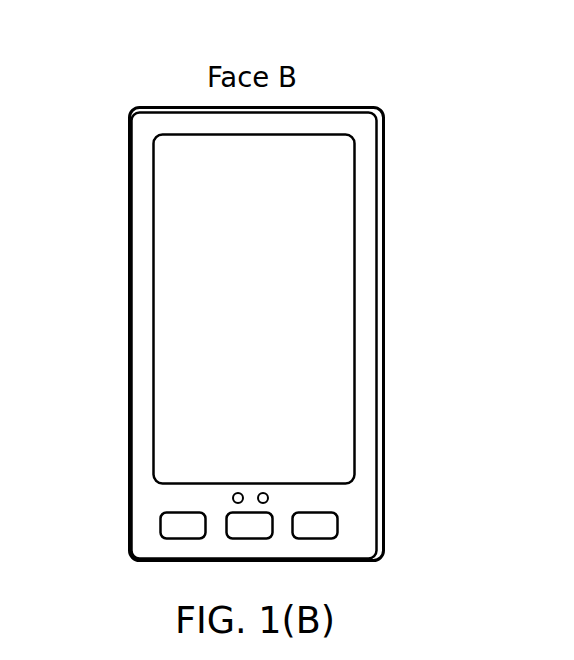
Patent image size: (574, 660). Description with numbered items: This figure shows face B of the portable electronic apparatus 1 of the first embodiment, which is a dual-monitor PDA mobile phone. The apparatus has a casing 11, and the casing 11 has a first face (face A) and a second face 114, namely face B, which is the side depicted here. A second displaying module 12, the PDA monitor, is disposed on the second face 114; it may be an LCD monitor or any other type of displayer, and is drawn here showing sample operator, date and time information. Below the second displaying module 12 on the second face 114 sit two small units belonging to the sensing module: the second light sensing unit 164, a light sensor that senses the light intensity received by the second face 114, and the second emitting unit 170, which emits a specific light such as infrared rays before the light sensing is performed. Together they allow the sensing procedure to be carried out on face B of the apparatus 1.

The portable electronic apparatus 1 is at (386, 80).
The casing 11 is at (130, 110).
The second displaying module 12 is at (355, 217).
The second face 114 is at (142, 248).
The second emitting unit 170 is at (233, 497).
The second light sensing unit 164 is at (268, 499).